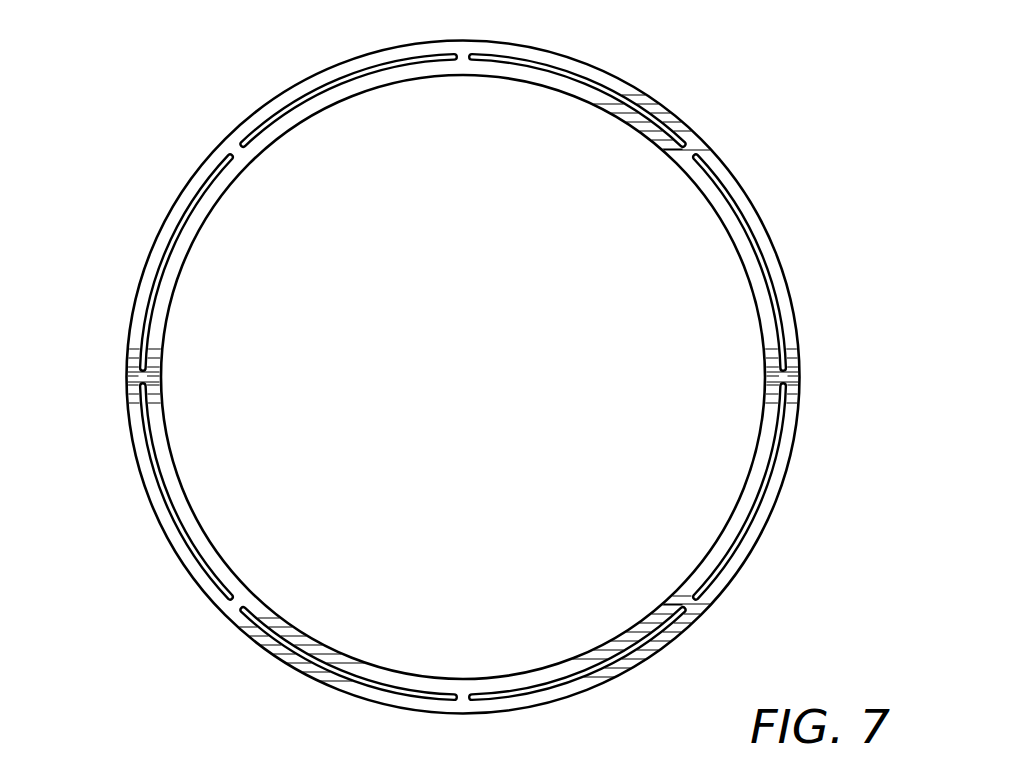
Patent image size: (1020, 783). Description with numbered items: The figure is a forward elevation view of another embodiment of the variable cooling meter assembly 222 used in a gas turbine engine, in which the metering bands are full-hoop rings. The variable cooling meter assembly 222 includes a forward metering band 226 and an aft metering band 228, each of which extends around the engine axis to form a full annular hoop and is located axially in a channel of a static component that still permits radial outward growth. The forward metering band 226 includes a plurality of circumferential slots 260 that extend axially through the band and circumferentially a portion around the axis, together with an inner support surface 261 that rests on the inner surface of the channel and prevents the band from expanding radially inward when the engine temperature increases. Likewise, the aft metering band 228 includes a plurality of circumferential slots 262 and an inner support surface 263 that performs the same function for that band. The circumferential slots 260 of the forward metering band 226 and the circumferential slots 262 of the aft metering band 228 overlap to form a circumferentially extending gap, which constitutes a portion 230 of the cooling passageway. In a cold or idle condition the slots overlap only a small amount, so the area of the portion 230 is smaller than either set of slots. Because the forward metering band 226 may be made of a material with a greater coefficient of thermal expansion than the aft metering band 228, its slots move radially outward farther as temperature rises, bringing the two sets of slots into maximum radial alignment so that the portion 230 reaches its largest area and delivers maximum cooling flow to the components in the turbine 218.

The turbine 218 is at (697, 59).
The variable cooling meter assembly 222 is at (724, 101).
The aft metering band 228 is at (744, 167).
The forward metering band 226 is at (783, 300).
The portion of the cooling passageway 230 is at (760, 488).
The circumferential slots 260 is at (138, 392).
The inner support surface 261 is at (200, 520).
The inner support surface 263 is at (232, 541).
The circumferential slots 262 is at (257, 128).